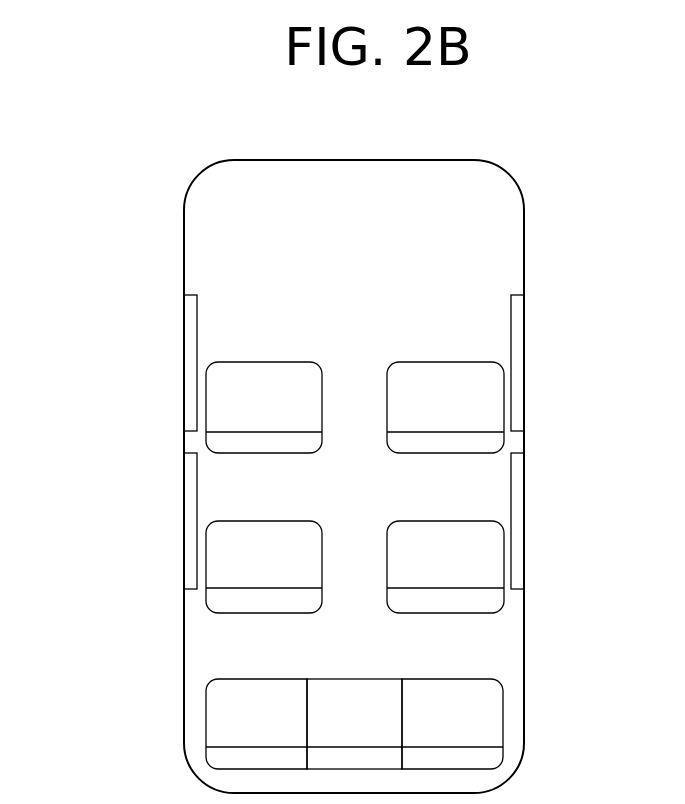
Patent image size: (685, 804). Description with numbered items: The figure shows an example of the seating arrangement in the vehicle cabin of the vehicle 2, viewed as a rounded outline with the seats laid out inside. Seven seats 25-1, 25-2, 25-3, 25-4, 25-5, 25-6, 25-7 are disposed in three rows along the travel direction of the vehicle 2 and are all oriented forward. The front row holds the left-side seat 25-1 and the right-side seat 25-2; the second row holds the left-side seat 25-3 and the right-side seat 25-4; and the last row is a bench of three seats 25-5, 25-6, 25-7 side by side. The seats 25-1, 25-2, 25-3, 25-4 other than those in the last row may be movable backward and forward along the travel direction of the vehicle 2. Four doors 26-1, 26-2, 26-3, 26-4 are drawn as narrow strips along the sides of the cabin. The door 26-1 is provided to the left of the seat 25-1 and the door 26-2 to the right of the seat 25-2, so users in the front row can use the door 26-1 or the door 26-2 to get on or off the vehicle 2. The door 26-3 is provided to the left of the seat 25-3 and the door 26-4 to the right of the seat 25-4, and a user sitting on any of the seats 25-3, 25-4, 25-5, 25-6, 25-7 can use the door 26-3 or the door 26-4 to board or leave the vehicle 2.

The vehicle 2 is at (572, 653).
The seat 25-1 is at (258, 372).
The seat 25-2 is at (448, 372).
The seat 25-3 is at (258, 543).
The seat 25-4 is at (448, 543).
The seat 25-5 is at (254, 702).
The seat 25-6 is at (347, 702).
The seat 25-7 is at (444, 702).
The door 26-1 is at (184, 363).
The door 26-2 is at (524, 352).
The door 26-3 is at (184, 511).
The door 26-4 is at (524, 522).